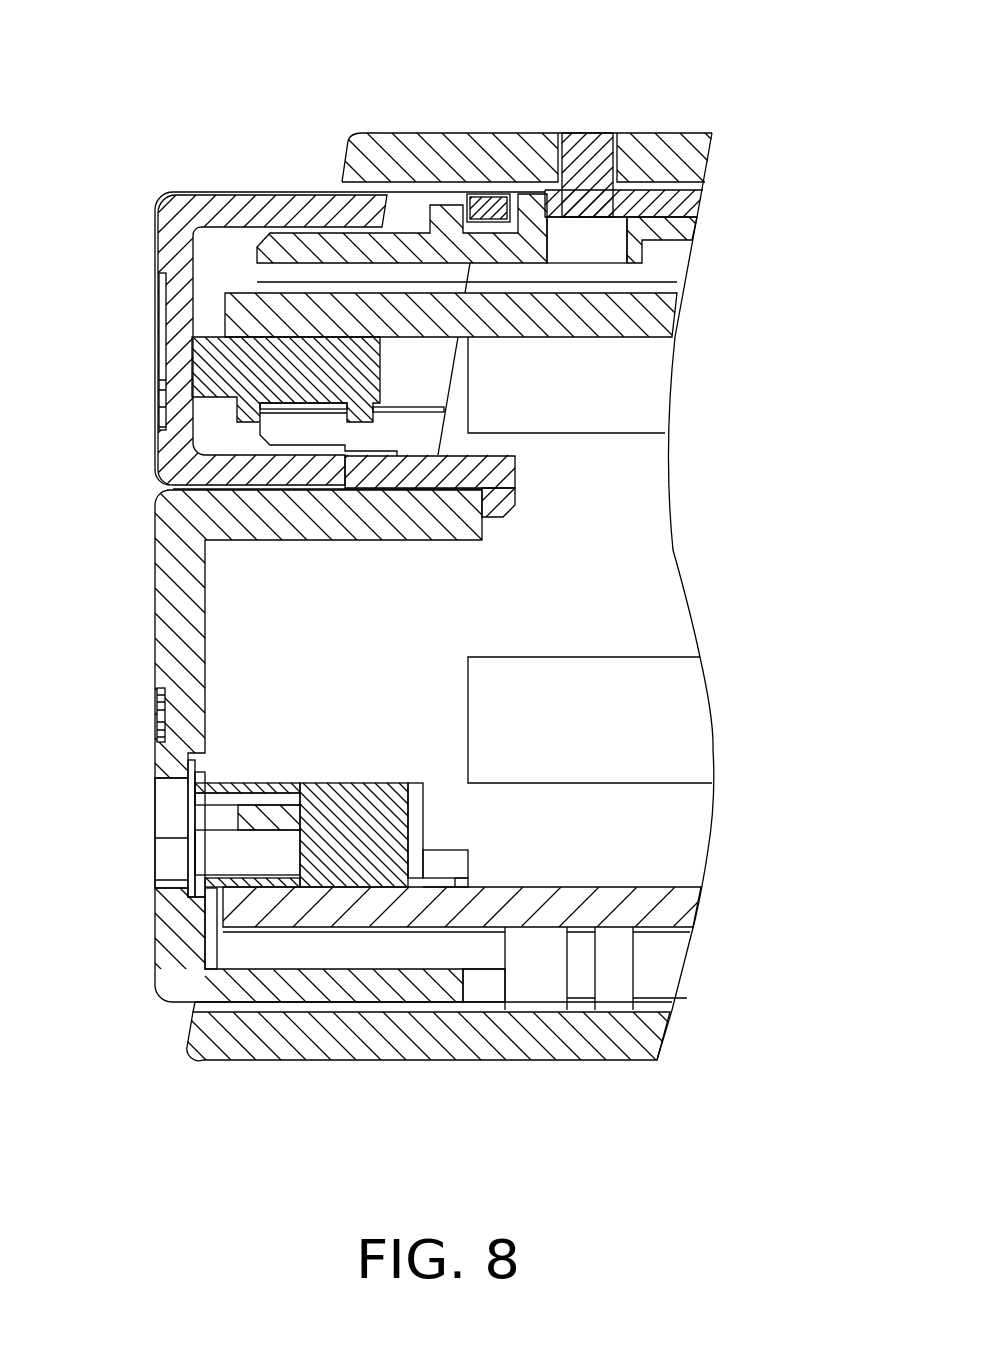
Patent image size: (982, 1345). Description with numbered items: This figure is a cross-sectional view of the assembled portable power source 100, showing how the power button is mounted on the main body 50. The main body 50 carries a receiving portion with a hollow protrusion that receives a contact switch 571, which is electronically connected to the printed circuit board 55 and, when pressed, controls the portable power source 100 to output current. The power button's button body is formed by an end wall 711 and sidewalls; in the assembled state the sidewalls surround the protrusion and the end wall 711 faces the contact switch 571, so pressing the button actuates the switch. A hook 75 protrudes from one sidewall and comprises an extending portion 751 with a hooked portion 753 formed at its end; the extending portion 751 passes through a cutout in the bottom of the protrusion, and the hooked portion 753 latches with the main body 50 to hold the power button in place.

The portable power source 100 is at (441, 532).
The end wall 711 is at (157, 243).
The contact switch 571 is at (170, 308).
The printed circuit board 55 is at (637, 318).
The hook 75 is at (496, 451).
The extending portion 751 is at (457, 472).
The hooked portion 753 is at (503, 498).
The main body 50 is at (155, 588).